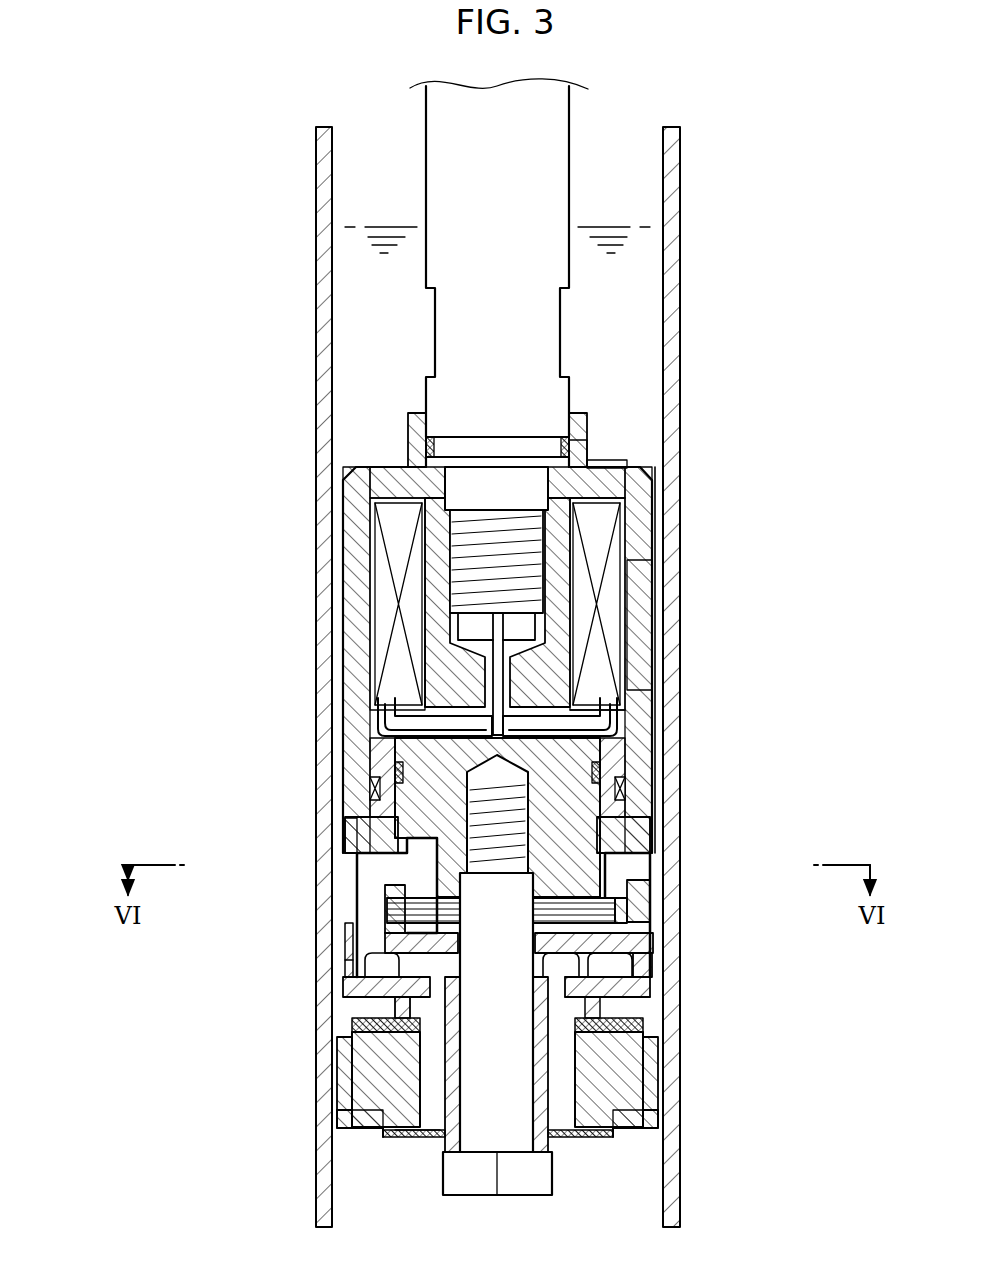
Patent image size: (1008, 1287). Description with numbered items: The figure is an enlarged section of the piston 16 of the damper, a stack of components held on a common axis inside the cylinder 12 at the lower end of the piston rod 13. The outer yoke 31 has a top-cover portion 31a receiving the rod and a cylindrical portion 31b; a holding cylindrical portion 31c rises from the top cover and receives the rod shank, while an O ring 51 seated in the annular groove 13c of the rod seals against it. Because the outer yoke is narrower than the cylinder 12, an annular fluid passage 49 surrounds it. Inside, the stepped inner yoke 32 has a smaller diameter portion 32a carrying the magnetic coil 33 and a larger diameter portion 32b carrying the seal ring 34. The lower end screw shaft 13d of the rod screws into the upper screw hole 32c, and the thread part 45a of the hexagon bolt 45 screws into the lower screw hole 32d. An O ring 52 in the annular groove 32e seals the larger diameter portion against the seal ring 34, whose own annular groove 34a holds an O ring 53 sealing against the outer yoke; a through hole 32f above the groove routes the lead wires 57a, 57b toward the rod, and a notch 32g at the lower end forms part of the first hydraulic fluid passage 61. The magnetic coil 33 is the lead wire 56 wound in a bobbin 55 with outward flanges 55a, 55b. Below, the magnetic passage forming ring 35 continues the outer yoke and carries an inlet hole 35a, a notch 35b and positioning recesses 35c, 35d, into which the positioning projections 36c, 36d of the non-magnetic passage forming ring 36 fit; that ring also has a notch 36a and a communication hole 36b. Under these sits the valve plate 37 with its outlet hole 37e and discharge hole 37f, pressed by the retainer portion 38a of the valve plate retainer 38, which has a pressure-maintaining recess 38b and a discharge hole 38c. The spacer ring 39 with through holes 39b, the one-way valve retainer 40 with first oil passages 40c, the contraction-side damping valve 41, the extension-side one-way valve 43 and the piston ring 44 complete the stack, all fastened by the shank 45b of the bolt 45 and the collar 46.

The cylinder 12 is at (320, 207).
The piston rod 13 is at (570, 204).
The annular groove 13c is at (540, 440).
The lower end screw shaft 13d is at (560, 526).
The piston 16 is at (368, 455).
The outer yoke 31 is at (343, 494).
The top-cover portion 31a is at (622, 466).
The cylindrical portion 31b is at (645, 626).
The holding cylindrical portion 31c is at (600, 450).
The inner yoke 32 is at (420, 540).
The smaller diameter portion 32a is at (423, 660).
The larger diameter portion 32b is at (398, 773).
The upper screw hole 32c is at (462, 570).
The lower screw hole 32d is at (362, 862).
The annular groove 32e is at (395, 762).
The through hole 32f is at (600, 760).
The notch 32g is at (400, 862).
The magnetic coil 33 is at (368, 630).
The seal ring 34 is at (620, 830).
The annular groove 34a is at (626, 811).
The magnetic passage forming ring 35 is at (660, 912).
The inlet hole 35a is at (655, 890).
The notch 35b is at (372, 918).
The positioning recess 35c is at (352, 845).
The positioning recess 35d is at (636, 850).
The non-magnetic passage forming ring 36 is at (368, 848).
The notch 36a is at (622, 925).
The communication hole 36b is at (372, 902).
The positioning projection 36c is at (358, 826).
The positioning projection 36d is at (640, 841).
The valve plate 37 is at (622, 970).
The outlet hole 37e is at (348, 968).
The discharge hole 37f is at (382, 944).
The valve plate retainer 38 is at (382, 980).
The retainer portion 38a is at (610, 955).
The pressure-maintaining recess 38b is at (640, 995).
The discharge hole 38c is at (400, 1002).
The spacer ring 39 is at (640, 1020).
The through hole 39b is at (400, 1020).
The one-way valve retainer 40 is at (338, 1108).
The first oil passage 40c is at (425, 1138).
The contraction-side damping valve 41 is at (400, 1032).
The extension-side one-way valve 43 is at (400, 1137).
The piston ring 44 is at (362, 1060).
The hexagon bolt 45 is at (620, 998).
The thread part 45a is at (530, 800).
The shank 45b is at (515, 1060).
The collar 46 is at (552, 1140).
The annular fluid passage 49 is at (668, 670).
The O ring 51 is at (420, 448).
The O ring 52 is at (373, 787).
The O ring 53 is at (626, 786).
The bobbin 55 is at (612, 489).
The outward flange 55a is at (620, 518).
The outward flange 55b is at (620, 700).
The lead wire 56 is at (615, 585).
The lead wire 57a is at (394, 722).
The lead wire 57b is at (602, 722).
The first hydraulic fluid passage 61 is at (638, 901).